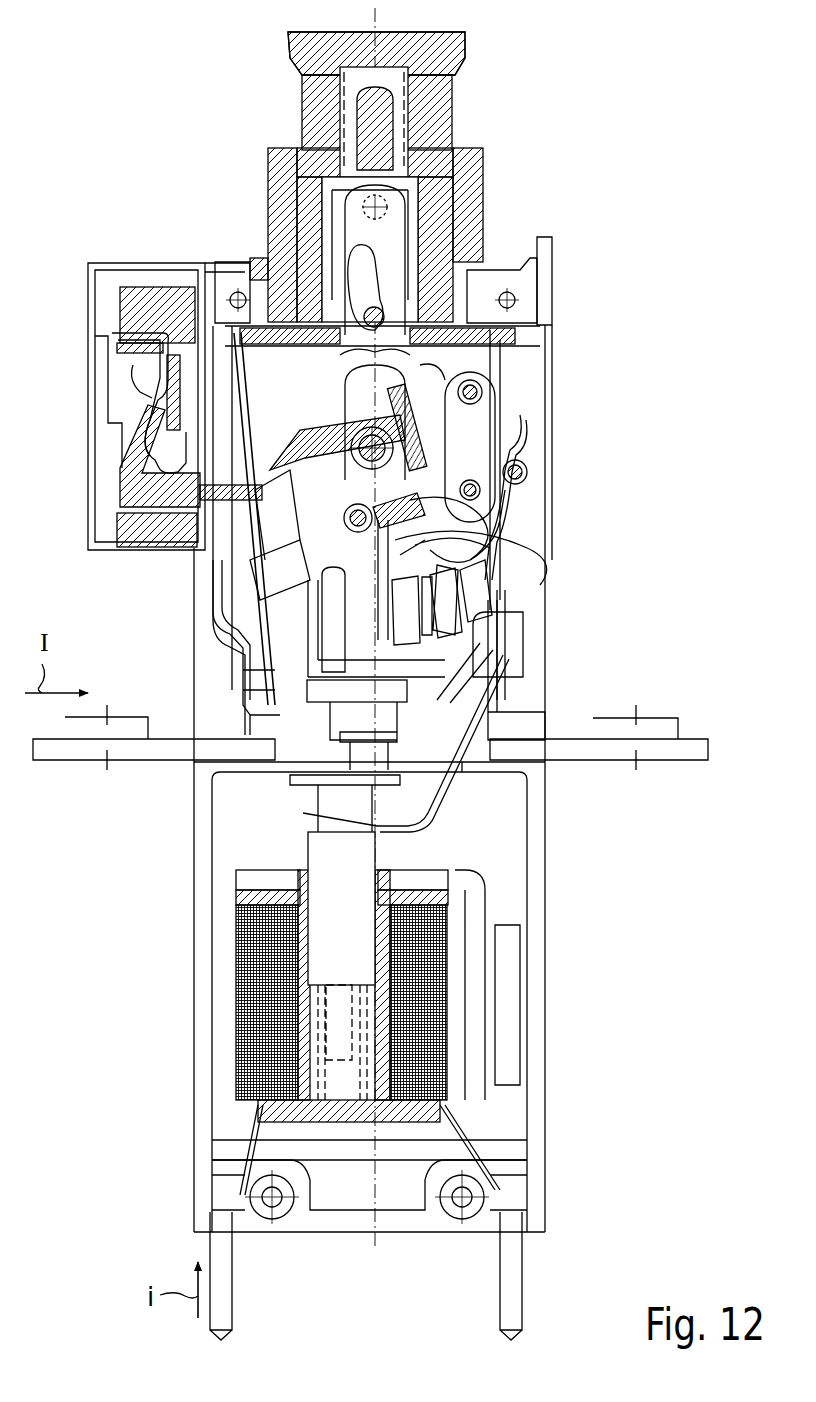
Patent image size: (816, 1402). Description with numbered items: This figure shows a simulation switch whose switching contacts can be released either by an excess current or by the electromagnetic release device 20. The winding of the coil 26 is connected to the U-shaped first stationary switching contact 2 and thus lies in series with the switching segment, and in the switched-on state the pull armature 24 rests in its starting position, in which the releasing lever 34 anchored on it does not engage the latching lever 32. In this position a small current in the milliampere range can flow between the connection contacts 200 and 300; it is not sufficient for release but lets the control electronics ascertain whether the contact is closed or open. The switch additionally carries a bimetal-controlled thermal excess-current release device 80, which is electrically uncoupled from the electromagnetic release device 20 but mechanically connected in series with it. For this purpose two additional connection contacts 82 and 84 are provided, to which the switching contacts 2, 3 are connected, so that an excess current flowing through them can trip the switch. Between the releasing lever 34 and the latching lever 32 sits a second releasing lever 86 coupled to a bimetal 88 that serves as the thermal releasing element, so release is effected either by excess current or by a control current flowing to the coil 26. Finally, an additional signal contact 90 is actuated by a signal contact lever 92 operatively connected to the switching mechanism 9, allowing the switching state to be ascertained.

The switching mechanism 9 is at (300, 395).
The signal contact 90 is at (128, 373).
The signal contact lever 92 is at (112, 498).
The bimetal 88 is at (260, 548).
The thermal excess-current release device 80 is at (256, 570).
The first stationary switching contact 2 is at (300, 688).
The connection contact 82 is at (65, 748).
The connection contact 84 is at (665, 750).
The second releasing lever 86 is at (505, 515).
The latching lever 32 is at (458, 540).
The releasing lever 34 is at (500, 582).
The switching contact 3 is at (452, 605).
The pull armature 24 is at (365, 856).
The electromagnetic release device 20 is at (510, 905).
The coil 26 is at (248, 993).
The connection contact 200 is at (228, 1292).
The connection contact 300 is at (520, 1292).